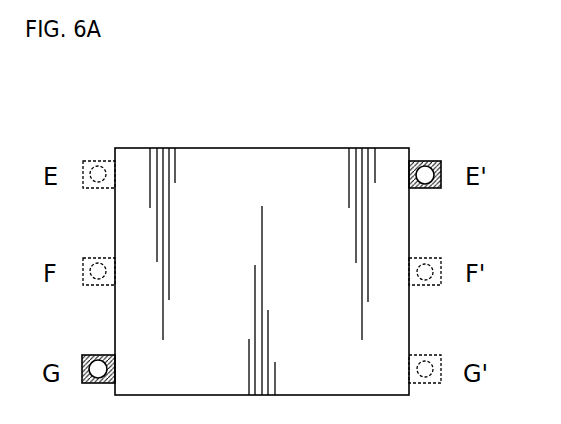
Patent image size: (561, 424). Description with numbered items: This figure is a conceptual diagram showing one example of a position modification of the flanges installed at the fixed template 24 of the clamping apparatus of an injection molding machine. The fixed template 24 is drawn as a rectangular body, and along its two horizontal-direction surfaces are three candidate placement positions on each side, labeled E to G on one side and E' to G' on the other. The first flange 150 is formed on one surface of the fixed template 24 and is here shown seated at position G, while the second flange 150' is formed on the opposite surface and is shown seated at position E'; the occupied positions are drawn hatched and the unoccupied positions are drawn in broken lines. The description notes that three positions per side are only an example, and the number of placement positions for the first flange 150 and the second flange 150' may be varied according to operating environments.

The fixed template 24 is at (268, 162).
The first flange 150 is at (72, 350).
The second flange 150' is at (448, 144).